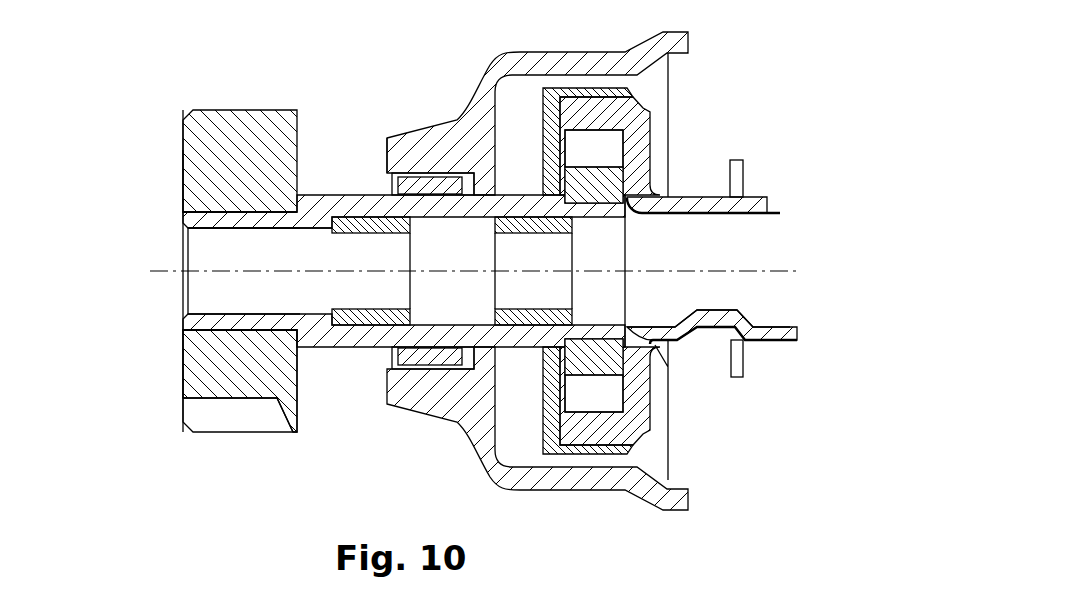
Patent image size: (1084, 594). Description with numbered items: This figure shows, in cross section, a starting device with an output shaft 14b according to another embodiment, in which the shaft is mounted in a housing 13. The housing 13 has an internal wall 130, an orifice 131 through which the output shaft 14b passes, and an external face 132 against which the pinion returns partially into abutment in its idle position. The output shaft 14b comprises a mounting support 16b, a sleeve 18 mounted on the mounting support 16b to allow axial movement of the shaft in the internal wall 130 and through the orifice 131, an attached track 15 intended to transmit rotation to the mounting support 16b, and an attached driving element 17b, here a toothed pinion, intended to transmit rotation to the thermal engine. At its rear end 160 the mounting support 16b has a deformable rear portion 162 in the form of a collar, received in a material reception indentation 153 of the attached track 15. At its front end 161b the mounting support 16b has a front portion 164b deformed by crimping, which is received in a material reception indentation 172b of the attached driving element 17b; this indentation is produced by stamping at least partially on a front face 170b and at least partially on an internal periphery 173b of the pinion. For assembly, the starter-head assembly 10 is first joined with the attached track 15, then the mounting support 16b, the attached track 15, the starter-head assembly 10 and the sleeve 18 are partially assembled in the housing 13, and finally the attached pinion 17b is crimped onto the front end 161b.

The starter-head assembly 10 is at (577, 458).
The housing 13 is at (505, 114).
The output shaft 14b is at (345, 259).
The attached track 15 is at (580, 177).
The mounting support 16b is at (345, 291).
The attached driving element 17b is at (215, 133).
The sleeve 18 is at (420, 183).
The internal wall 130 is at (480, 325).
The orifice 131 is at (384, 348).
The external face 132 is at (390, 155).
The material reception indentation 153 is at (602, 170).
The rear end 160 is at (593, 210).
The front end 161b is at (243, 323).
The rear portion 162 is at (655, 350).
The front portion 164b is at (193, 217).
The front face 170b is at (183, 367).
The material reception indentation 172b is at (197, 178).
The internal periphery 173b is at (247, 212).